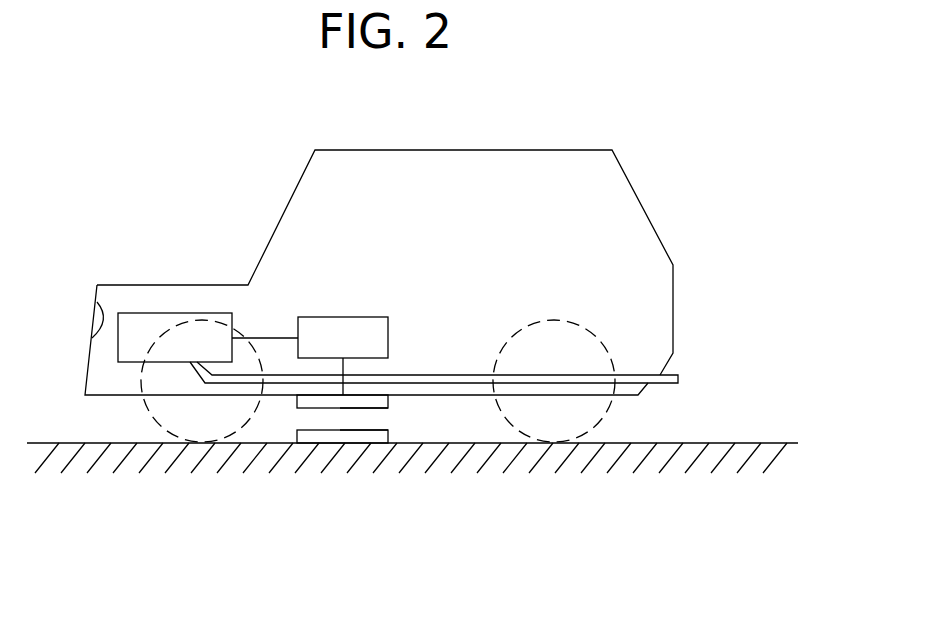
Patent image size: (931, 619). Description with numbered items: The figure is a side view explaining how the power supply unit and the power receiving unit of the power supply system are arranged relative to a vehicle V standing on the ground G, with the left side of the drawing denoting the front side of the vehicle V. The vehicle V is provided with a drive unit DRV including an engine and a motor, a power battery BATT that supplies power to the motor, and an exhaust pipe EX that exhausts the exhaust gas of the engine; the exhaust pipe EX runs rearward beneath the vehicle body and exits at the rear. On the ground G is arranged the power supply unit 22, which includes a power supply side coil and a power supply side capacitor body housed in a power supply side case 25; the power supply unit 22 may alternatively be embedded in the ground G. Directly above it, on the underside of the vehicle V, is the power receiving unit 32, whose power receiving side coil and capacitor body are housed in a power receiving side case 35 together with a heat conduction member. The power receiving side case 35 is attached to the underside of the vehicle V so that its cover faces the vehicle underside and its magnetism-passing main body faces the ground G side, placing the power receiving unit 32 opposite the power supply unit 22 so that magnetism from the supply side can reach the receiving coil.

The vehicle V is at (583, 150).
The drive unit DRV is at (157, 313).
The power battery BATT is at (343, 317).
The exhaust pipe EX is at (629, 380).
The power receiving side case 35 is at (373, 400).
The power receiving unit 32 is at (388, 403).
The power supply side case 25 is at (333, 437).
The power supply unit 22 is at (388, 437).
The ground G is at (742, 443).